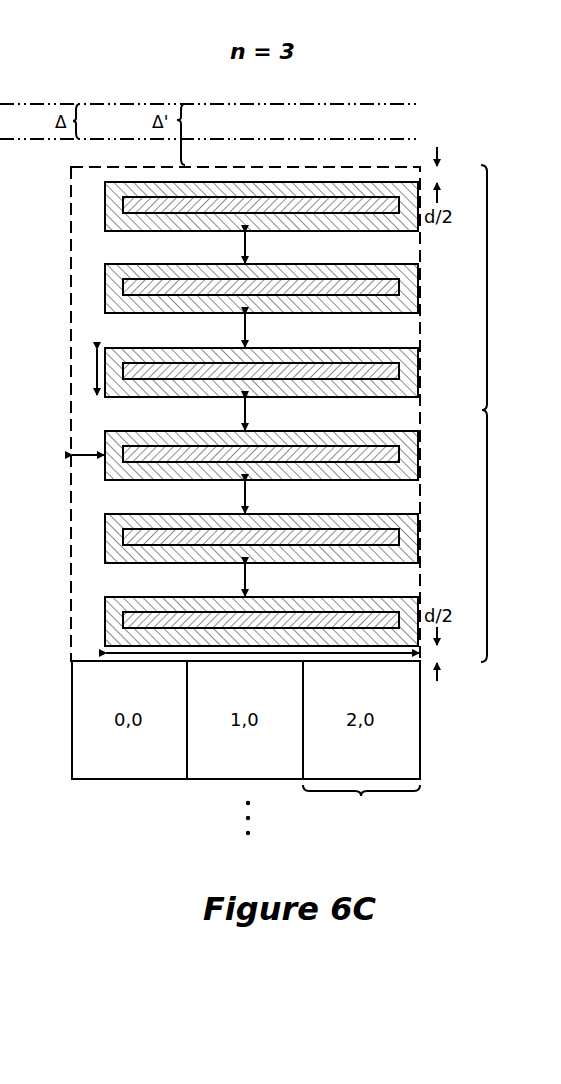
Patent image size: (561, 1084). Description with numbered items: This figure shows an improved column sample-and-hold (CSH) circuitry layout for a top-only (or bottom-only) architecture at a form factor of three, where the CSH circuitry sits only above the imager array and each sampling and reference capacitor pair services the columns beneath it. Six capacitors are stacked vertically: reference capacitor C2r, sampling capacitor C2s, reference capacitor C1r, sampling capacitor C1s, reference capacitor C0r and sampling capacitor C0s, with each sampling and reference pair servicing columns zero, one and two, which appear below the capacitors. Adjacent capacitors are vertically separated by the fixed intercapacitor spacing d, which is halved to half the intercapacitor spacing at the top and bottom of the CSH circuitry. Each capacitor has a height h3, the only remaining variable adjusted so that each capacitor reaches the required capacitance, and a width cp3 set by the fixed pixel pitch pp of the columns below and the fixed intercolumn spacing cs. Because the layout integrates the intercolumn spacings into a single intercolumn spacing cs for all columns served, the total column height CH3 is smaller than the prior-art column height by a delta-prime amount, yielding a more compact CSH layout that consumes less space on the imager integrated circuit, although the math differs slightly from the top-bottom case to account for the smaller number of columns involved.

The reference capacitor C2r is at (261, 206).
The sampling capacitor C2s is at (261, 288).
The reference capacitor C1r is at (261, 372).
The sampling capacitor C1s is at (261, 455).
The reference capacitor C0r is at (261, 538).
The sampling capacitor C0s is at (261, 621).
The intercapacitor spacing d is at (256, 414).
The column height CH3 is at (506, 413).
The capacitor height h3 is at (86, 372).
The intercolumn spacing cs is at (88, 441).
The capacitor width cp3 is at (100, 652).
The pixel pitch pp is at (361, 803).